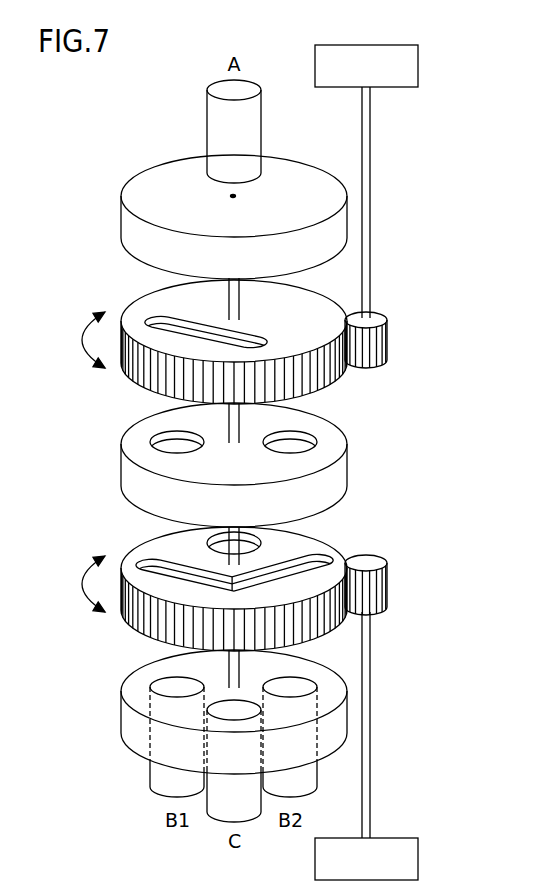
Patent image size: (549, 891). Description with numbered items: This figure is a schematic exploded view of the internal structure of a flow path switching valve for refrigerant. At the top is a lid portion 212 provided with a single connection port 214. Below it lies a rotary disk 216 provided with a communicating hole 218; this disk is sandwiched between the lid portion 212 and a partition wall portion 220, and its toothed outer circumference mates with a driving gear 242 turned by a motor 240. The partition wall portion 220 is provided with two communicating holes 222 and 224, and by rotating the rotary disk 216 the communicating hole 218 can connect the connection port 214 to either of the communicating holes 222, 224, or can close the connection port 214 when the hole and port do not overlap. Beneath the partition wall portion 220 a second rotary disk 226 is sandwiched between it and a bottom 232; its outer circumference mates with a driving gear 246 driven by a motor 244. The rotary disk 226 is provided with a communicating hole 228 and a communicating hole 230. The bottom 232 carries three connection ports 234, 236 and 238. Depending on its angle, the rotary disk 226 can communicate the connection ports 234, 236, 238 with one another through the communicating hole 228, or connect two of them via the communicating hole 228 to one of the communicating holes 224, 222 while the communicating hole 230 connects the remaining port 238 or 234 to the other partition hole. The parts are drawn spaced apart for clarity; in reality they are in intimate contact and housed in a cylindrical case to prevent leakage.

The lid portion 212 is at (120, 224).
The connection port 214 is at (206, 121).
The rotary disk 216 is at (235, 341).
The communicating hole 218 is at (168, 323).
The partition wall portion 220 is at (235, 464).
The communicating hole 222 is at (302, 435).
The communicating hole 224 is at (168, 450).
The rotary disk 226 is at (235, 587).
The communicating hole 228 is at (168, 570).
The communicating hole 230 is at (258, 541).
The bottom 232 is at (204, 765).
The connection port 234 is at (158, 800).
The connection port 236 is at (213, 818).
The connection port 238 is at (270, 798).
The motor 240 is at (418, 66).
The driving gear 242 is at (387, 338).
The motor 244 is at (418, 860).
The driving gear 246 is at (387, 583).